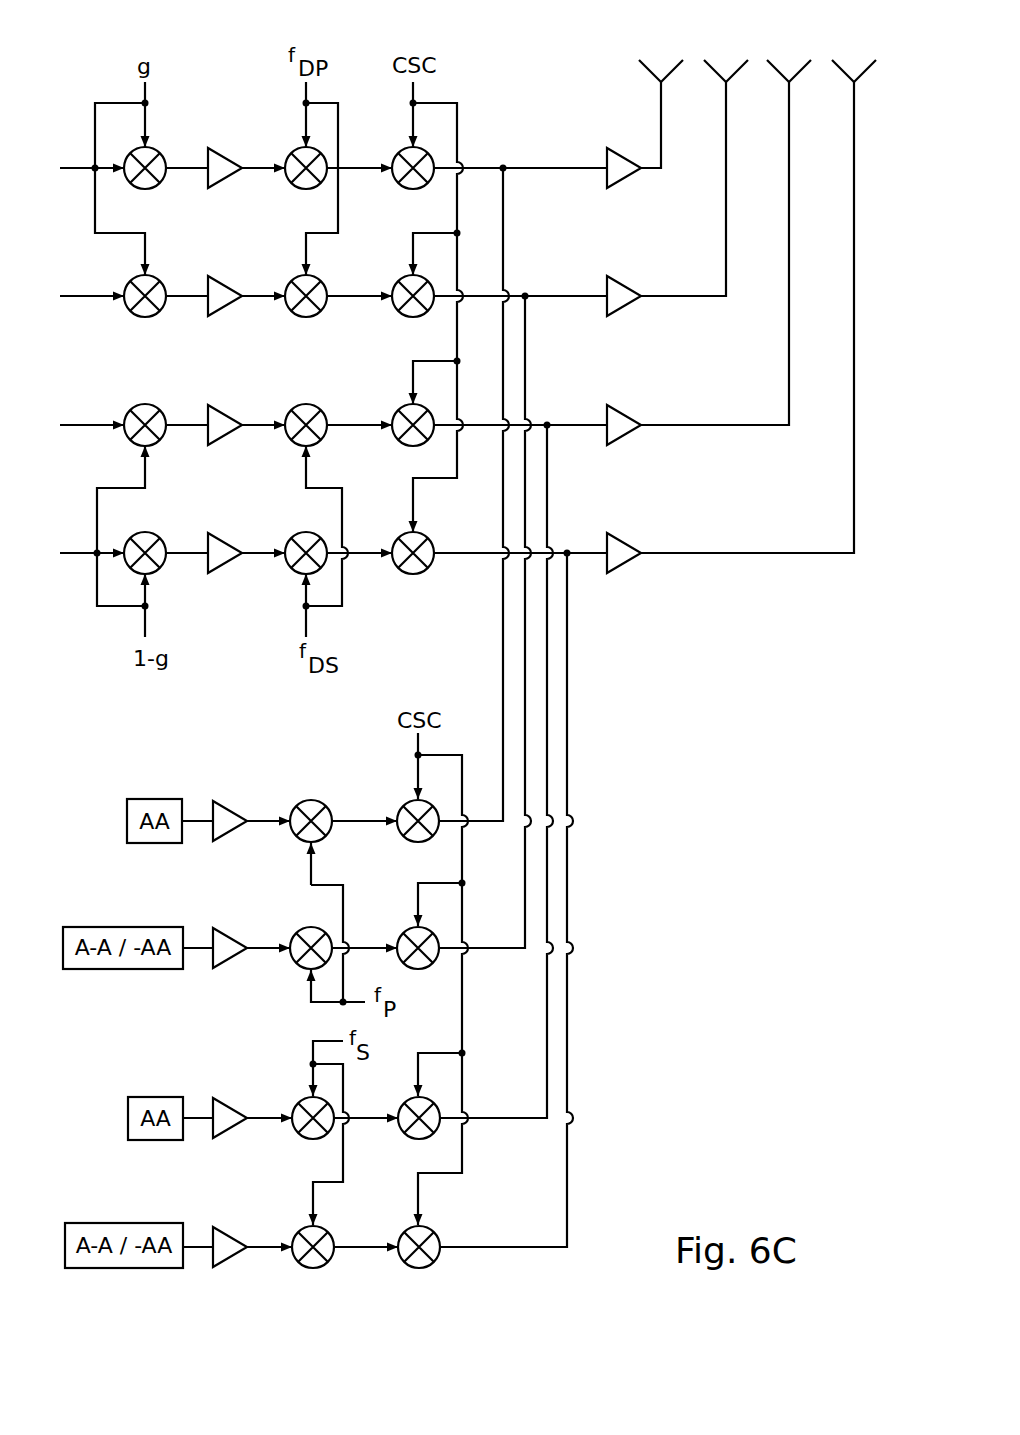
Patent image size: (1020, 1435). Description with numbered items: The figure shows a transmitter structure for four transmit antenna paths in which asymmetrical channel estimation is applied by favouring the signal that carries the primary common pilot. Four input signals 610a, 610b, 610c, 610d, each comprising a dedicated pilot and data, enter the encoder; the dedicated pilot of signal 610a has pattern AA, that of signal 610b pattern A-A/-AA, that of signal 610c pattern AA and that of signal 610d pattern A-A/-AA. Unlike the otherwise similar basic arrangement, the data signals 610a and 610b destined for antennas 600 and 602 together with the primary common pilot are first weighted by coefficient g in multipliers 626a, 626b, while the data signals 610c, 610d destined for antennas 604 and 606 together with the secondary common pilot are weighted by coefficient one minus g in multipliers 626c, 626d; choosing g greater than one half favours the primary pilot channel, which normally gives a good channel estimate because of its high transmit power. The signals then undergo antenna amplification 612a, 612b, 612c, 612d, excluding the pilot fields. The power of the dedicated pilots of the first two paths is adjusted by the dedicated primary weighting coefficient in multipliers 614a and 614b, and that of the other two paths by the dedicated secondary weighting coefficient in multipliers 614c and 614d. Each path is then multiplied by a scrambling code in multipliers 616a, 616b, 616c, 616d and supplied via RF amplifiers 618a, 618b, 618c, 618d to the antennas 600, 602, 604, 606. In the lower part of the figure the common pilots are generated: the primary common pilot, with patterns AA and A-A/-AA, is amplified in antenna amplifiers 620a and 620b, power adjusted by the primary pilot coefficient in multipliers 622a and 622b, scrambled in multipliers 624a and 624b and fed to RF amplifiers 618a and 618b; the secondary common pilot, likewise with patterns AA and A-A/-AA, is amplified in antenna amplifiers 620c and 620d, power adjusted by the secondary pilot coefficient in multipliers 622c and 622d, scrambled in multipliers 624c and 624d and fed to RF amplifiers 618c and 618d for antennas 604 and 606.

The transmit antenna 600 is at (670, 62).
The transmit antenna 602 is at (735, 62).
The transmit antenna 604 is at (798, 62).
The transmit antenna 606 is at (863, 62).
The input signal 610a is at (80, 168).
The input signal 610b is at (80, 296).
The input signal 610c is at (78, 425).
The input signal 610d is at (73, 555).
The antenna amplification 612a is at (227, 157).
The antenna amplification 612b is at (227, 285).
The antenna amplification 612c is at (227, 414).
The antenna amplification 612d is at (228, 575).
The multiplier 614a is at (283, 153).
The multiplier 614b is at (283, 281).
The multiplier 614c is at (287, 408).
The multiplier 614d is at (287, 541).
The multiplier 616a is at (393, 154).
The multiplier 616b is at (393, 282).
The multiplier 616c is at (393, 411).
The multiplier 616d is at (393, 541).
The RF amplifier 618a is at (627, 156).
The RF amplifier 618b is at (627, 284).
The RF amplifier 618c is at (627, 413).
The RF amplifier 618d is at (627, 541).
The antenna amplifier 620a is at (232, 810).
The antenna amplifier 620b is at (232, 930).
The antenna amplifier 620c is at (229, 1098).
The antenna amplifier 620d is at (234, 1232).
The multiplier 622a is at (295, 806).
The multiplier 622b is at (294, 937).
The multiplier 622c is at (292, 1103).
The multiplier 622d is at (293, 1233).
The multiplier 624a is at (396, 808).
The multiplier 624b is at (396, 937).
The multiplier 624c is at (397, 1110).
The multiplier 624d is at (398, 1238).
The multiplier 626a is at (167, 155).
The multiplier 626b is at (166, 283).
The multiplier 626c is at (171, 412).
The multiplier 626d is at (170, 539).